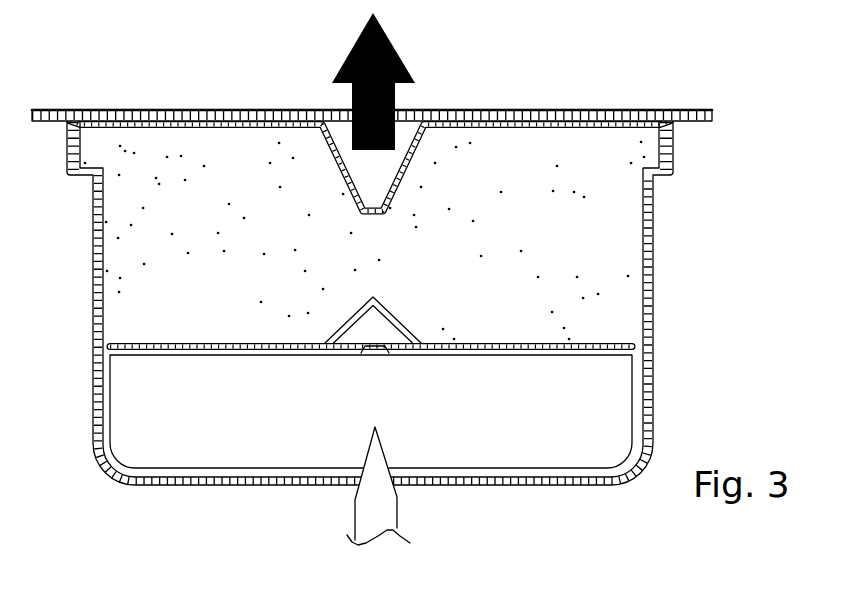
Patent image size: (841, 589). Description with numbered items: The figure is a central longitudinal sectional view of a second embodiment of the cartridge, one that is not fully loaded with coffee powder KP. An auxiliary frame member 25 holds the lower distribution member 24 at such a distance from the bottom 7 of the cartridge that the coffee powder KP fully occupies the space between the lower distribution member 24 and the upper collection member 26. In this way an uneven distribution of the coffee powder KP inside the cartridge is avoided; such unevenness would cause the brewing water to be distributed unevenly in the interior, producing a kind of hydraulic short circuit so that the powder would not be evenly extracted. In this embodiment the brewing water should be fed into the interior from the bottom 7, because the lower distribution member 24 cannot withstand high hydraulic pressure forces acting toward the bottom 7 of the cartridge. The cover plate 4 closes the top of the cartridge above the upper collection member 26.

The cover plate 4 is at (580, 111).
The upper collection member 26 is at (509, 122).
The coffee powder KP is at (585, 258).
The auxiliary frame member 25 is at (108, 403).
The lower distribution member 24 is at (502, 356).
The bottom 7 is at (494, 487).